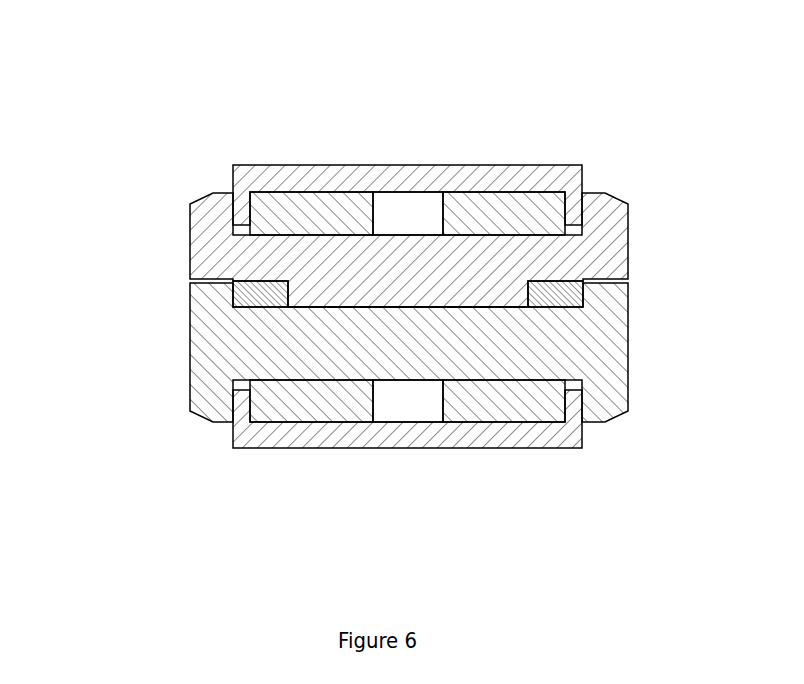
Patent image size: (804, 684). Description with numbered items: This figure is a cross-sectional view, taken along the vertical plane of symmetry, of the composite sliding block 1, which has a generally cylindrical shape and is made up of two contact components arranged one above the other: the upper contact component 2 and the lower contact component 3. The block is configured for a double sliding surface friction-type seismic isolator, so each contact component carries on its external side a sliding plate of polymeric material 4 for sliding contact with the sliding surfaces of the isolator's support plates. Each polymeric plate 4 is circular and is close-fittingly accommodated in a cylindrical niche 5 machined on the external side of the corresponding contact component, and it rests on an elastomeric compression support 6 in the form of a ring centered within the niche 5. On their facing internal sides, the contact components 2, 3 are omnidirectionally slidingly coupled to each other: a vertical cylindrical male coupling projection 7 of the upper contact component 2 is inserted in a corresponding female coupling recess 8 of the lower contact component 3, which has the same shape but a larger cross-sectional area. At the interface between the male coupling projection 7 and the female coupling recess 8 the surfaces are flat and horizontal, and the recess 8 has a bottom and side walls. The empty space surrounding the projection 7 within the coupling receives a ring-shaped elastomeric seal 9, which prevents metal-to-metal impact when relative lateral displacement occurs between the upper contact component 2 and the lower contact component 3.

The composite sliding block 1 is at (168, 118).
The upper contact component 2 is at (366, 212).
The lower contact component 3 is at (219, 381).
The sliding plate of polymeric material 4 is at (417, 159).
The cylindrical niche 5 is at (421, 220).
The elastomeric compression support 6 is at (516, 210).
The male coupling projection 7 is at (509, 278).
The female coupling recess 8 is at (361, 317).
The ring-shaped elastomeric seal 9 is at (595, 314).